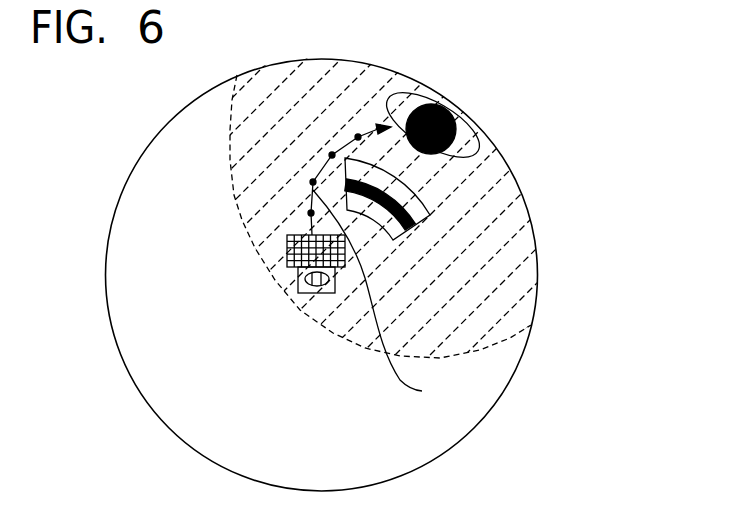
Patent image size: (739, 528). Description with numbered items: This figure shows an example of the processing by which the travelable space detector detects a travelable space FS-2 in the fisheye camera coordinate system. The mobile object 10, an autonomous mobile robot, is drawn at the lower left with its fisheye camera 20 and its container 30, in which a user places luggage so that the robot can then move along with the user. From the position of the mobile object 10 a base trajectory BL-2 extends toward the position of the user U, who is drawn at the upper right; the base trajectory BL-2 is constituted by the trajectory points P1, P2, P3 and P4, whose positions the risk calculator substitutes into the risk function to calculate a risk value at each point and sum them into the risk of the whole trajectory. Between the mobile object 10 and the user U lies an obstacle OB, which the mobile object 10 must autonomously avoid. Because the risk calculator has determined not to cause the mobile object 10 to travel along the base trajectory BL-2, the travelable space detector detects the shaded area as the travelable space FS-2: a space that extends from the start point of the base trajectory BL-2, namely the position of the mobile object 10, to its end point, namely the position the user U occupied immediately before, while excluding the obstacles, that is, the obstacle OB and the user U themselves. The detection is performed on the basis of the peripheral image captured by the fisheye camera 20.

The trajectory point P1 is at (311, 213).
The trajectory point P2 is at (313, 182).
The trajectory point P3 is at (332, 155).
The trajectory point P4 is at (358, 137).
The user U is at (470, 125).
The travelable space FS-2 is at (483, 181).
The obstacle OB is at (428, 210).
The base trajectory BL-2 is at (396, 298).
The mobile object 10 is at (310, 297).
The fisheye camera 20 is at (333, 288).
The container 30 is at (287, 243).